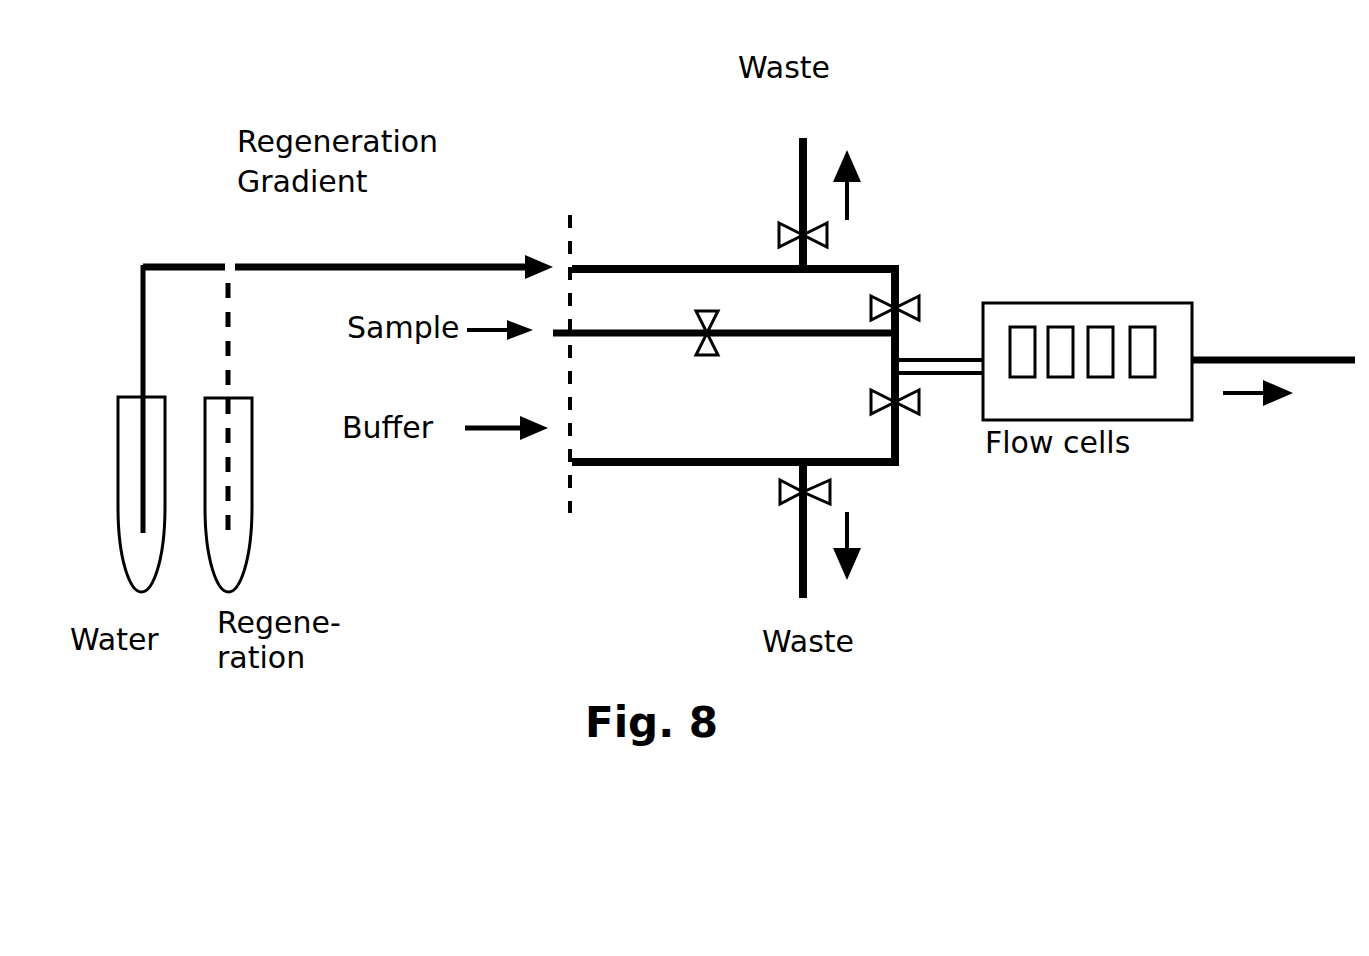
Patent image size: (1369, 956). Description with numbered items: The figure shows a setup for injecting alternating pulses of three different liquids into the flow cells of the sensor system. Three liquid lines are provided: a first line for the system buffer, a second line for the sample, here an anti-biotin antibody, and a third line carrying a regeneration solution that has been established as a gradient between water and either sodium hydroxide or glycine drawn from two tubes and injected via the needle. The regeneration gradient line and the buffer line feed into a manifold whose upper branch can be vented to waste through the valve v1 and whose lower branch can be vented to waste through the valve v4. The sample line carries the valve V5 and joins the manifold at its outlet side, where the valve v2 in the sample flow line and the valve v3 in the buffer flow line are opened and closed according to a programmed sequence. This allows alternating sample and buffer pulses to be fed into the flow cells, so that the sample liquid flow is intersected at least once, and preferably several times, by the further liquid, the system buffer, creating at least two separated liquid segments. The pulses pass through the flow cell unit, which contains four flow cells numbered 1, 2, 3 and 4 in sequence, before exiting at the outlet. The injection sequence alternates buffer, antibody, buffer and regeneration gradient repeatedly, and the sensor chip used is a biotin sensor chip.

The valve v1 (upper waste valve) v1 is at (826, 237).
The valve v2 is at (863, 309).
The valve v3 is at (862, 401).
The valve v4 (lower waste valve) v4 is at (834, 487).
The valve V5 (sample line valve) V5 is at (707, 356).
The flow cell 1 is at (1022, 370).
The flow cell 2 is at (1060, 370).
The flow cell 3 is at (1100, 370).
The flow cell 4 is at (1142, 370).